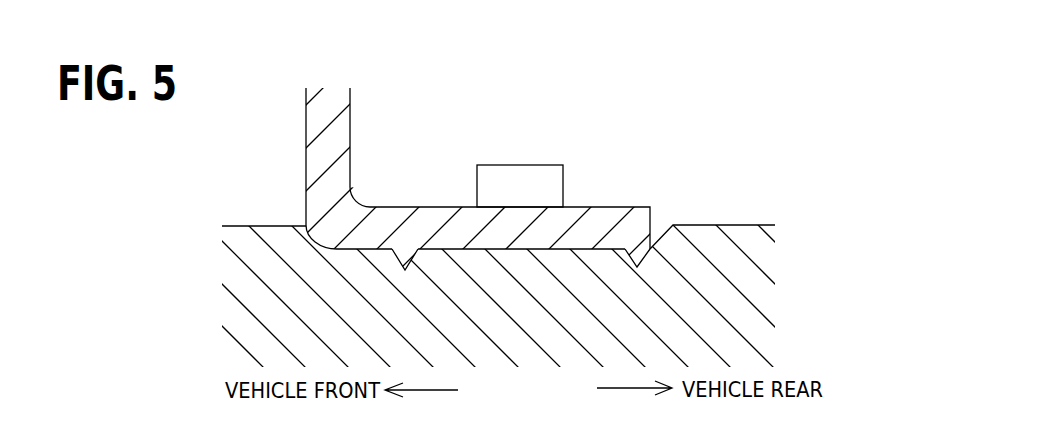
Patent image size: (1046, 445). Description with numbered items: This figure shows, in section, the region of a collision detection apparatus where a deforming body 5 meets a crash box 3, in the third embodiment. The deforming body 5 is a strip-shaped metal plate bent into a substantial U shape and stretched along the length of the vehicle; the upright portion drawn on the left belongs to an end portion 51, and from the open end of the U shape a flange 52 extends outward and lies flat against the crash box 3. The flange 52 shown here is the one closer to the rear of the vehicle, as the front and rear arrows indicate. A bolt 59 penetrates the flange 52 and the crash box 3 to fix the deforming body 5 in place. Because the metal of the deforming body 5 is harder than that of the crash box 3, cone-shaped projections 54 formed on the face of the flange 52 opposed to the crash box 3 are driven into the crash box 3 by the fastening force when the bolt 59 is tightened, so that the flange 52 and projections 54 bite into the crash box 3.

The crash box 3 is at (567, 342).
The deforming body 5 is at (457, 176).
The end portion 51 is at (320, 117).
The flange 52 is at (428, 222).
The cone-shaped projection 54 is at (402, 259).
The bolt 59 is at (518, 180).